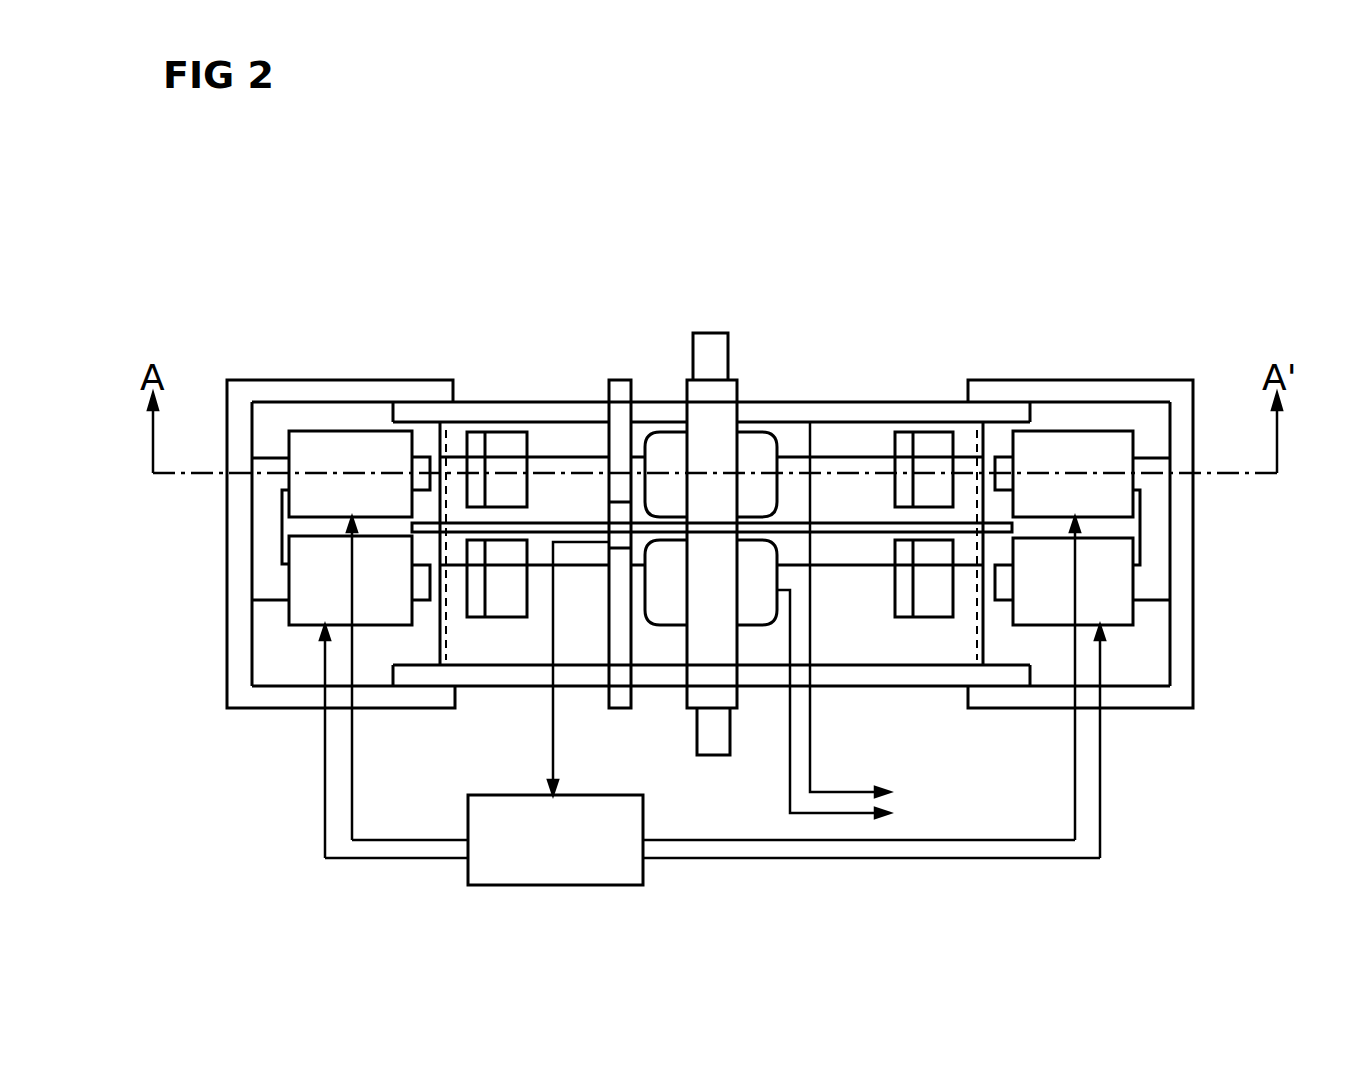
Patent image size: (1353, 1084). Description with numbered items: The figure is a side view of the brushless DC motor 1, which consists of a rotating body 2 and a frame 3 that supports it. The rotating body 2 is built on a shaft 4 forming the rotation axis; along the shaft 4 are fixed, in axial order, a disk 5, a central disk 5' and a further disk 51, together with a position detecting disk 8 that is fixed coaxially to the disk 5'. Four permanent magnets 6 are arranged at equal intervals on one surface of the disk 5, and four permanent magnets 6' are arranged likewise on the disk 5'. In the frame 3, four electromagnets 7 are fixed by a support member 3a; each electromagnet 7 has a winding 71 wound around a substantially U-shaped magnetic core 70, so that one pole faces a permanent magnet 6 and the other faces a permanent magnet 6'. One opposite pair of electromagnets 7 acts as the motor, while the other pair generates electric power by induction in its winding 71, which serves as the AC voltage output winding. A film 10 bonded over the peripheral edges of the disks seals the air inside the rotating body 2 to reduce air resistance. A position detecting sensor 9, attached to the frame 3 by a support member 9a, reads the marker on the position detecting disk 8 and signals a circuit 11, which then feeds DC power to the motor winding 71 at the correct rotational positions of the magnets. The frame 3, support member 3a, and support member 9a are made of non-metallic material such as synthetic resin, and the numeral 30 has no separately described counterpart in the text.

The brushless DC motor 1 is at (233, 243).
The rotating body 2 is at (993, 438).
The frame 3 is at (530, 410).
The stator frame 30 is at (720, 517).
The support member 3a is at (240, 505).
The shaft 4 is at (712, 350).
The disk 5 is at (711, 368).
The disk 5' is at (711, 400).
The permanent magnet 6 is at (713, 405).
The permanent magnet 6' is at (710, 653).
The electromagnet 7 is at (665, 385).
The magnetic core 70 is at (263, 557).
The winding 71 is at (758, 567).
The position detecting disk 8 is at (595, 530).
The position detecting sensor 9 is at (622, 537).
The support member 9a is at (622, 692).
The film 10 is at (483, 517).
The circuit 11 is at (560, 862).
The disk 51 is at (868, 653).